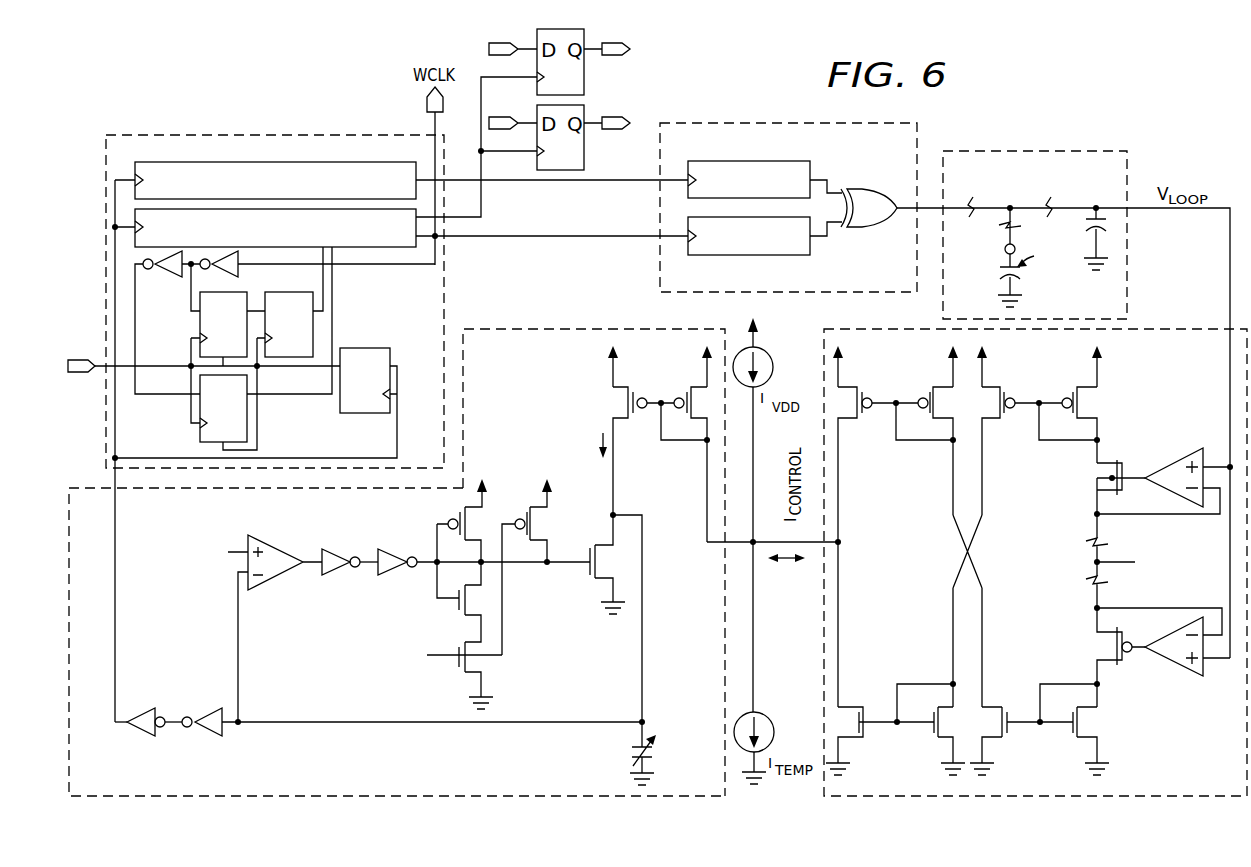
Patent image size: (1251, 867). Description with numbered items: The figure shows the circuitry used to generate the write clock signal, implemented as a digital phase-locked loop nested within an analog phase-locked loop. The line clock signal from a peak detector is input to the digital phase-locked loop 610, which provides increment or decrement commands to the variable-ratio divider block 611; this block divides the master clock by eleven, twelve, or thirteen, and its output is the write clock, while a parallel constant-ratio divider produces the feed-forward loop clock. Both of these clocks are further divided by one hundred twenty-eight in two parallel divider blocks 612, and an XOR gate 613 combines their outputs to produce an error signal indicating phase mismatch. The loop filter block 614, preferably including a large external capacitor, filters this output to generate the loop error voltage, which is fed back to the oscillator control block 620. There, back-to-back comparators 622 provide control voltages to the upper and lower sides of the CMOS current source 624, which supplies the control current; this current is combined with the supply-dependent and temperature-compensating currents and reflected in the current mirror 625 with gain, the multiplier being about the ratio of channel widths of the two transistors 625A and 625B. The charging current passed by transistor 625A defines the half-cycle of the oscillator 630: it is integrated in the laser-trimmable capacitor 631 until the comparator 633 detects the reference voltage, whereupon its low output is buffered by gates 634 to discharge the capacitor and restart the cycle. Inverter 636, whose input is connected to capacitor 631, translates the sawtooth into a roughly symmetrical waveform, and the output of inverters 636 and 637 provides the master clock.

The digital phase-locked loop 610 is at (243, 129).
The variable-ratio divider block 611 is at (210, 191).
The divider block 612 is at (768, 191).
The XOR gate 613 is at (858, 190).
The loop filter block 614 is at (1110, 184).
The oscillator control block 620 is at (1214, 765).
The back-to-back comparators 622 is at (1176, 458).
The CMOS current source 624 is at (906, 555).
The current mirror 625 is at (594, 562).
The transistor 625A is at (579, 388).
The transistor 625B is at (699, 383).
The oscillator 630 is at (290, 781).
The capacitor 631 is at (623, 749).
The comparator 633 is at (284, 547).
The gates 634 is at (430, 539).
The inverter 636 is at (206, 738).
The inverter 637 is at (140, 738).